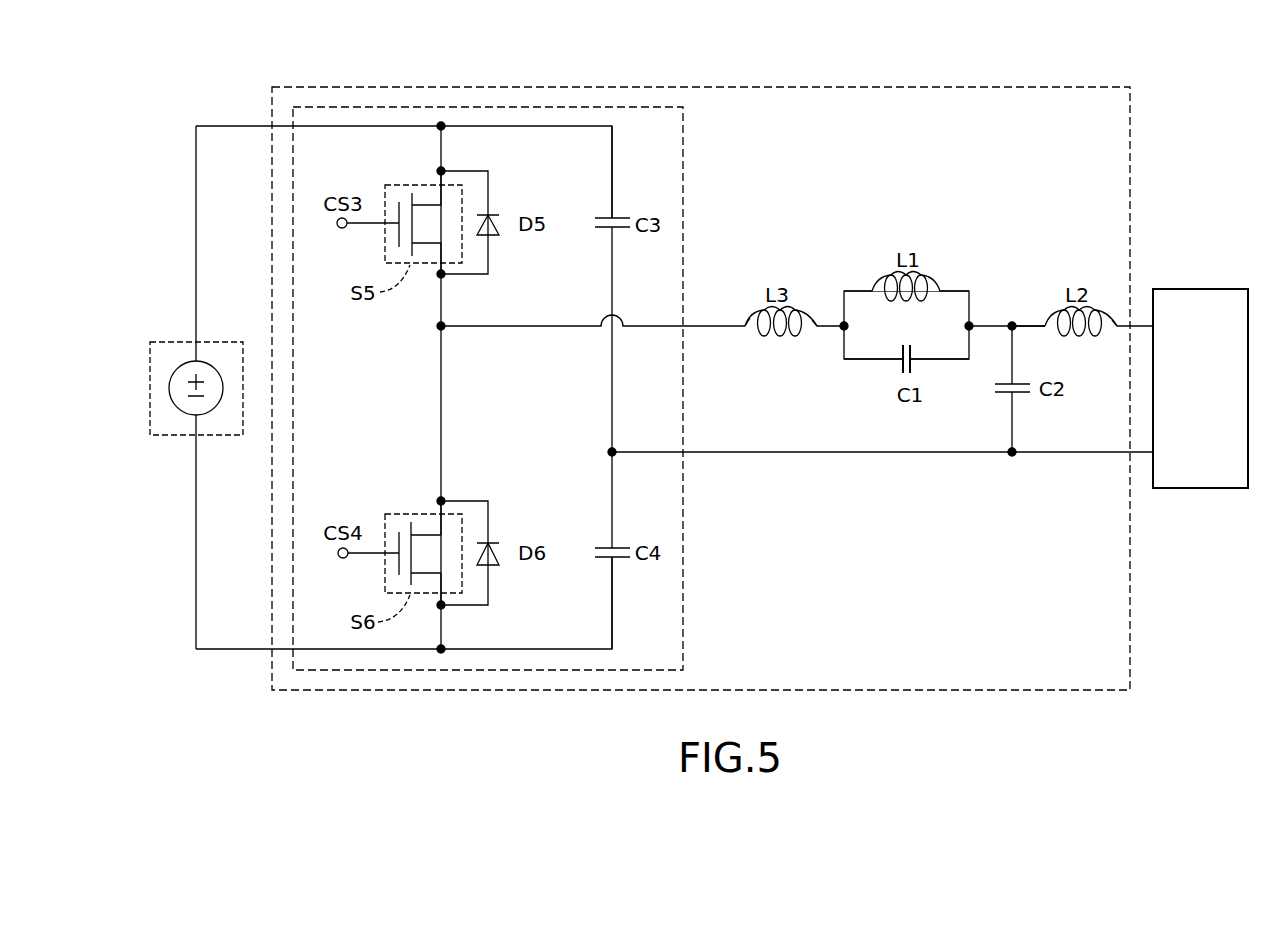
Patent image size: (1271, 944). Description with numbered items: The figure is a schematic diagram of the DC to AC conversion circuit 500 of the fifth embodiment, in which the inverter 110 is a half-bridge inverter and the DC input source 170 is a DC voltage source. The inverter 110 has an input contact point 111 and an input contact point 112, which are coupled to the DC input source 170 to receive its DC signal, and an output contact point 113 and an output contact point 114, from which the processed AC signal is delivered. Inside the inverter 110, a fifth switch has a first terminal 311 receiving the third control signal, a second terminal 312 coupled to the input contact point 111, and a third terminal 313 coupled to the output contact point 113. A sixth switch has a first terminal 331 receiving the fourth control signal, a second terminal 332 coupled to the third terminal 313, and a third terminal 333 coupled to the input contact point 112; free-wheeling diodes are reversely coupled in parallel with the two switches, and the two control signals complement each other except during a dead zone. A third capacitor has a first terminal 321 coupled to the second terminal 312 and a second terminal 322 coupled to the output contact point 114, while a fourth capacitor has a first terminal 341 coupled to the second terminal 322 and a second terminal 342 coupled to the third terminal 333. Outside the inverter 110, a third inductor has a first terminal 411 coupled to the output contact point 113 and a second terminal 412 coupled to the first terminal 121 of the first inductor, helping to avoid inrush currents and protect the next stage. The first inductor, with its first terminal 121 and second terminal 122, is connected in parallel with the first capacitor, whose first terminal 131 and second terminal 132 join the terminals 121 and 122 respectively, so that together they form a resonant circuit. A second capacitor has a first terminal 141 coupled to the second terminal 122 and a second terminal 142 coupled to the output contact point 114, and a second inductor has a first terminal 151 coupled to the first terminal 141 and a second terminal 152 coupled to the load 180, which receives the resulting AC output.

The DC to AC conversion circuit 500 is at (1000, 86).
The inverter 110 is at (683, 158).
The input contact point 111 is at (246, 126).
The input contact point 112 is at (245, 649).
The output contact point 113 is at (714, 324).
The output contact point 114 is at (720, 451).
The DC input source 170 is at (170, 340).
The load 180 is at (1200, 289).
The first terminal of the fifth switch 311 is at (375, 222).
The second terminal of the fifth switch 312 is at (438, 182).
The third terminal of the fifth switch 313 is at (438, 268).
The first terminal of the sixth switch 331 is at (374, 551).
The second terminal of the sixth switch 332 is at (438, 511).
The third terminal of the sixth switch 333 is at (438, 598).
The first terminal of the third capacitor 321 is at (612, 172).
The second terminal of the third capacitor 322 is at (612, 277).
The first terminal of the fourth capacitor 341 is at (612, 503).
The second terminal of the fourth capacitor 342 is at (612, 607).
The first terminal of the third inductor 411 is at (748, 332).
The second terminal of the third inductor 412 is at (815, 332).
The first terminal of the first inductor 121 is at (860, 290).
The second terminal of the first inductor 122 is at (958, 290).
The first terminal of the first capacitor 131 is at (875, 362).
The second terminal of the first capacitor 132 is at (940, 362).
The first terminal of the second capacitor 141 is at (1012, 360).
The second terminal of the second capacitor 142 is at (1012, 425).
The first terminal of the second inductor 151 is at (1032, 323).
The second terminal of the second inductor 152 is at (1123, 321).